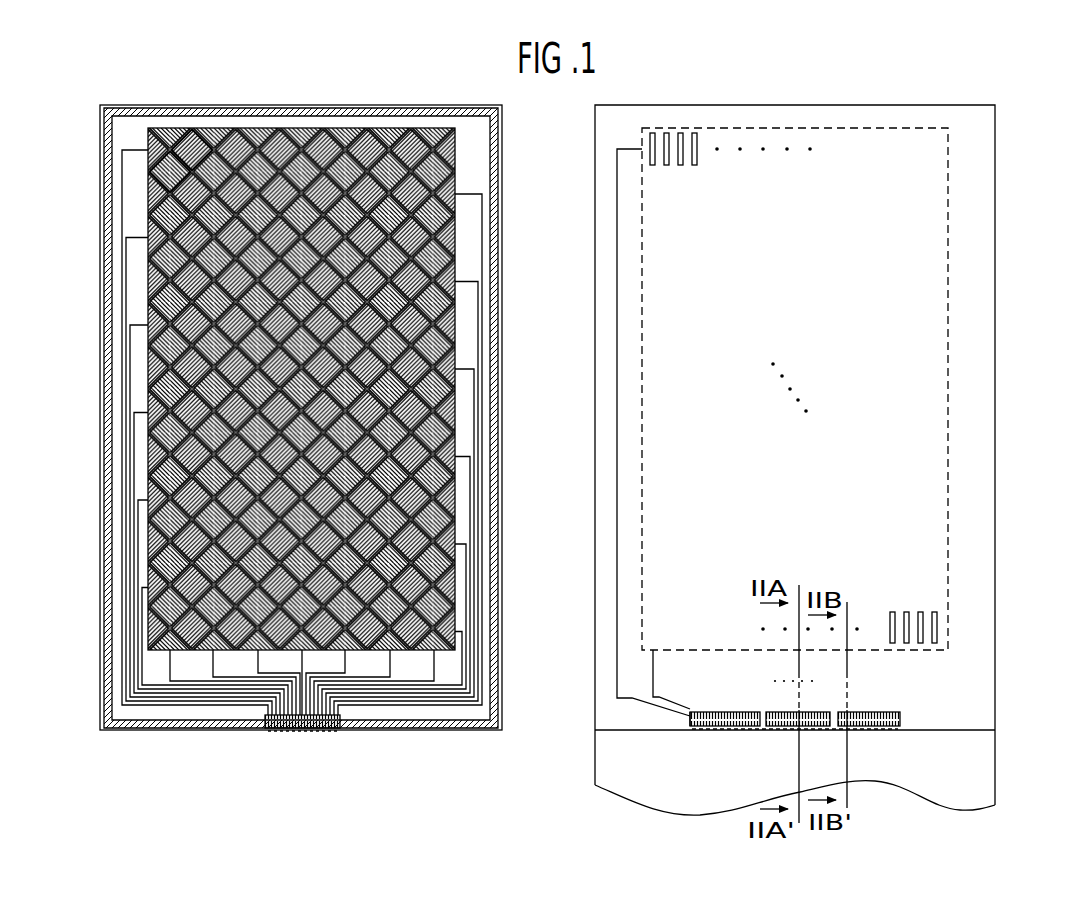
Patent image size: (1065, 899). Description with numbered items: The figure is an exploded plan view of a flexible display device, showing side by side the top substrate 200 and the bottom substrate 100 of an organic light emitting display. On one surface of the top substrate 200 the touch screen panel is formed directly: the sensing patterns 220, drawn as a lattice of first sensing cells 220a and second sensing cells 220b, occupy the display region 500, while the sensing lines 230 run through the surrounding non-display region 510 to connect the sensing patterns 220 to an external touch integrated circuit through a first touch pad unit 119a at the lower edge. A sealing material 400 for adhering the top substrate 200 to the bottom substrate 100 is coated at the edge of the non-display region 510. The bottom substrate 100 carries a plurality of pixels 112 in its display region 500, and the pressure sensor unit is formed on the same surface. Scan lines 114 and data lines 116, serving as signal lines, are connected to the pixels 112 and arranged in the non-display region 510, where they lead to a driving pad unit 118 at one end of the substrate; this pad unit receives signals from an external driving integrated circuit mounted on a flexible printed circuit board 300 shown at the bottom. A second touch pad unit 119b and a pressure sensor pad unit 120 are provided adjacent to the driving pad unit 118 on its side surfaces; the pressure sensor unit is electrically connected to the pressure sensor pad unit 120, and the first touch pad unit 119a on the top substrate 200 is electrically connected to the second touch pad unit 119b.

The bottom substrate 100 is at (788, 105).
The pixels 112 is at (681, 132).
The scan lines 114 is at (617, 673).
The data lines 116 is at (648, 678).
The driving pad unit 118 is at (688, 722).
The first touch pad unit 119a is at (342, 729).
The second touch pad unit 119b is at (752, 728).
The pressure sensor pad unit 120 is at (902, 727).
The top substrate 200 is at (378, 106).
The sensing patterns 220 is at (236, 67).
The first sensing cells 220a is at (193, 133).
The second sensing cells 220b is at (164, 152).
The sensing lines 230 is at (122, 203).
The flexible printed circuit board 300 is at (595, 766).
The sealing material 400 is at (499, 416).
The display region 500 is at (468, 240).
The non-display region 510 is at (478, 142).